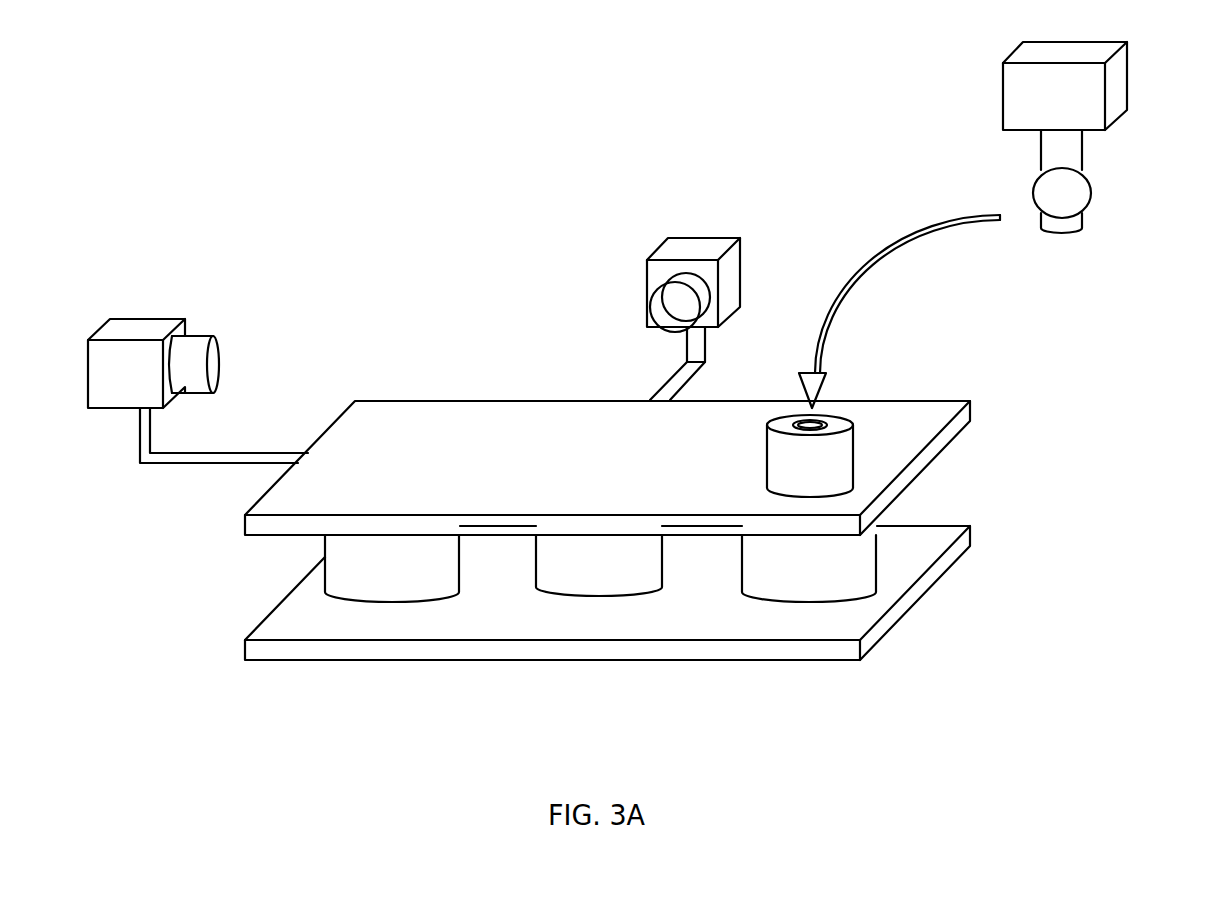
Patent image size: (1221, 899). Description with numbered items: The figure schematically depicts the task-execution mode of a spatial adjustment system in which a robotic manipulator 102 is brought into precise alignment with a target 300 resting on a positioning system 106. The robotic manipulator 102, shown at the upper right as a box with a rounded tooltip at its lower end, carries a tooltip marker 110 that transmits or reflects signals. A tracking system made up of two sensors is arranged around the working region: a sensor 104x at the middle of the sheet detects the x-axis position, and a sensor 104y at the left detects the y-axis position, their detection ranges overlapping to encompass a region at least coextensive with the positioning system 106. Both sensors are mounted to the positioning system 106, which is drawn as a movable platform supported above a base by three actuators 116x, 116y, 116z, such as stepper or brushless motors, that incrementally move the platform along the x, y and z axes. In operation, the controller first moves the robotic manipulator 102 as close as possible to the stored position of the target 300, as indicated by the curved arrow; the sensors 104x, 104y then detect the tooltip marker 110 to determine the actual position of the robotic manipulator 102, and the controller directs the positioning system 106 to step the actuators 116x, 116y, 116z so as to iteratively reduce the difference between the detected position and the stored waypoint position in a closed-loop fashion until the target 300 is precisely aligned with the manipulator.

The robotic manipulator 102 is at (1123, 95).
The tooltip marker 110 is at (1032, 195).
The sensor for detecting the x-axis position 104x is at (685, 248).
The sensor for detecting the y-axis position 104y is at (120, 330).
The target 300 is at (848, 438).
The positioning system 106 is at (997, 488).
The x-axis actuator 116x is at (398, 592).
The y-axis actuator 116y is at (808, 592).
The z-axis actuator 116z is at (603, 593).